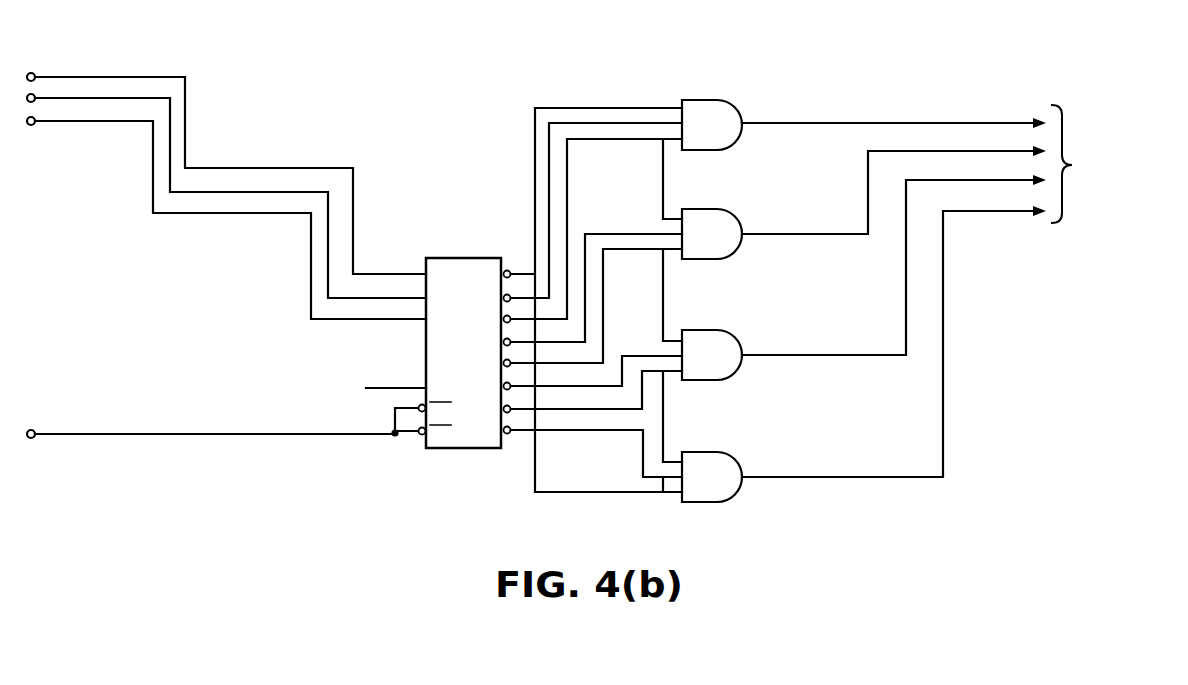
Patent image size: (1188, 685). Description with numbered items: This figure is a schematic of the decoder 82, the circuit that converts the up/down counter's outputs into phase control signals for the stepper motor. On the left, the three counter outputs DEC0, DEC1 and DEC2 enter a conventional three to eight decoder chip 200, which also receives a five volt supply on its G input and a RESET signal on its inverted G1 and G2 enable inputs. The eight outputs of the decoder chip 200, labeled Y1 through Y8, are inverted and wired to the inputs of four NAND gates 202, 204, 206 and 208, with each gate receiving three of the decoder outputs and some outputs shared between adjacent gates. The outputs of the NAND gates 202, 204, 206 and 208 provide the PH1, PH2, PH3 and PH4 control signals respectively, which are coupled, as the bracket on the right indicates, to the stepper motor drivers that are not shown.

The decoder 82 is at (601, 254).
The three to eight decoder chip 200 is at (463, 258).
The NAND gate 202 is at (719, 101).
The NAND gate 204 is at (719, 210).
The NAND gate 206 is at (721, 331).
The NAND gate 208 is at (738, 441).